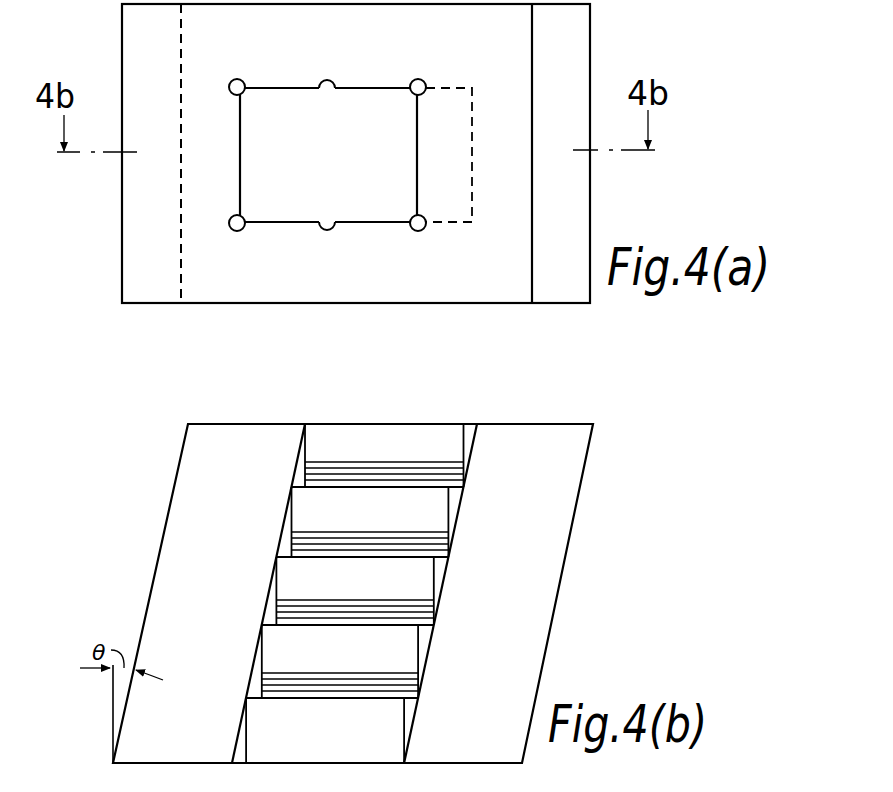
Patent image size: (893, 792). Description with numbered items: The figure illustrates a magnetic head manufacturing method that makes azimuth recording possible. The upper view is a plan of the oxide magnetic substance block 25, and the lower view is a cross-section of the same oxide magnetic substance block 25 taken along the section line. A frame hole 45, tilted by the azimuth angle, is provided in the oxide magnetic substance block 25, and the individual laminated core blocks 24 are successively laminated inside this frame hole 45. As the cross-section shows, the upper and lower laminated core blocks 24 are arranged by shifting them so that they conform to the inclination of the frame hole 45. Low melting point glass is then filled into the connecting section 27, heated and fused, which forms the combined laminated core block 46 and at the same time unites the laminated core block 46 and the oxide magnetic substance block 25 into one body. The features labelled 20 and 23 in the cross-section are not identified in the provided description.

In FIG. 4A, the connecting section 27 is at (245, 81).
In FIG. 4A, the frame hole 45 is at (271, 221).
In FIG. 4B, the frame hole 45 is at (476, 432).
In FIG. 4B, the laminated core block 46 is at (405, 421).
In FIG. 4B, the inclined sidewall 20 is at (302, 447).
In FIG. 4B, the grating / hatched layer 23 is at (302, 472).
In FIG. 4B, the laminated core block 24 is at (467, 452).
In FIG. 4B, the oxide magnetic substance block 25 is at (566, 573).